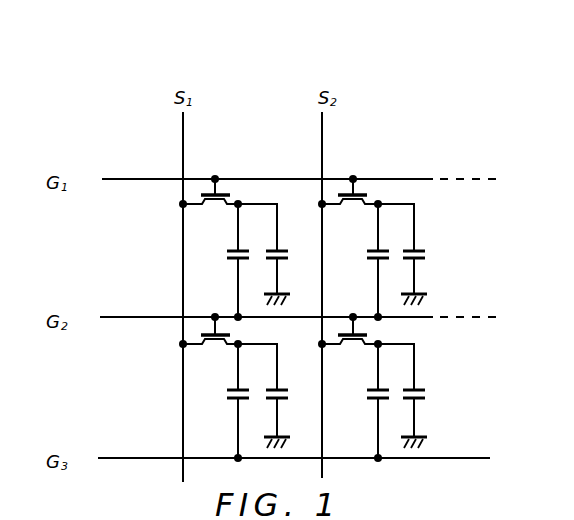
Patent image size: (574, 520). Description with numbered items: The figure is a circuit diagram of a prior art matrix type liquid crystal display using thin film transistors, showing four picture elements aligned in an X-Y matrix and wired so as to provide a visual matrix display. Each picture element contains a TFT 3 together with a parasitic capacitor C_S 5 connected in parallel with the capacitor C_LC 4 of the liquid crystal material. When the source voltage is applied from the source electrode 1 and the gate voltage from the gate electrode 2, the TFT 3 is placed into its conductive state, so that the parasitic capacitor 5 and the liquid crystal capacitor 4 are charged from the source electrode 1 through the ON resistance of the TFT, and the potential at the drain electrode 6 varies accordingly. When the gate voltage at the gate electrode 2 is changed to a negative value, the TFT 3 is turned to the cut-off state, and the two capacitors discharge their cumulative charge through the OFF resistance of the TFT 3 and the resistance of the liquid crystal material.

The source electrode 1 is at (186, 150).
The gate electrode 2 is at (118, 180).
The TFT 3 is at (222, 190).
The capacitor C_LC of the liquid crystal material 4 is at (289, 253).
The parasitic capacitor C_S 5 is at (228, 253).
The drain electrode 6 is at (242, 197).